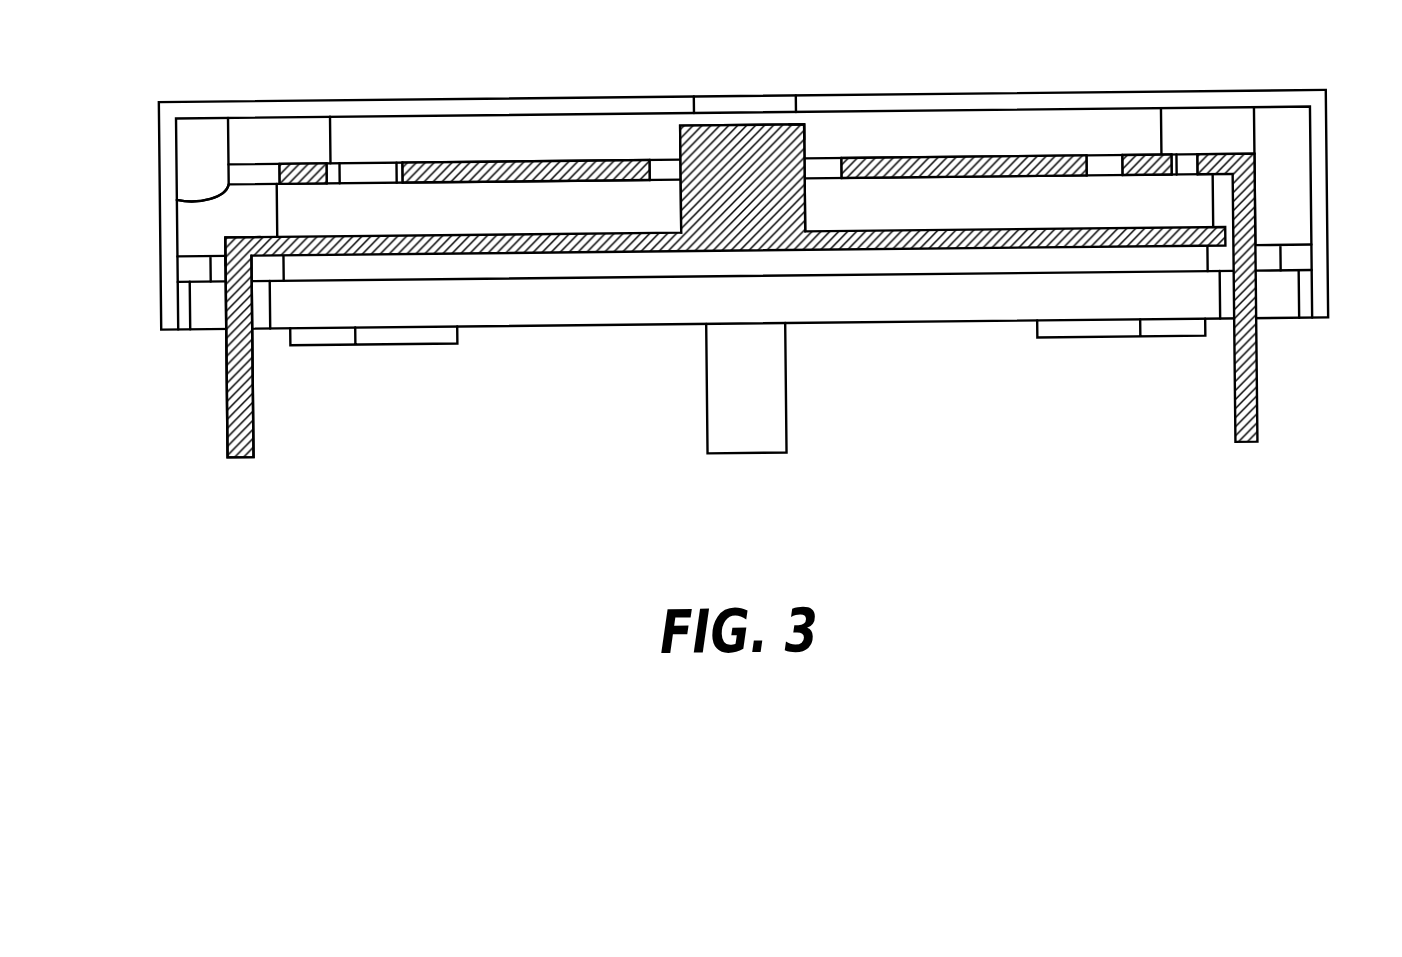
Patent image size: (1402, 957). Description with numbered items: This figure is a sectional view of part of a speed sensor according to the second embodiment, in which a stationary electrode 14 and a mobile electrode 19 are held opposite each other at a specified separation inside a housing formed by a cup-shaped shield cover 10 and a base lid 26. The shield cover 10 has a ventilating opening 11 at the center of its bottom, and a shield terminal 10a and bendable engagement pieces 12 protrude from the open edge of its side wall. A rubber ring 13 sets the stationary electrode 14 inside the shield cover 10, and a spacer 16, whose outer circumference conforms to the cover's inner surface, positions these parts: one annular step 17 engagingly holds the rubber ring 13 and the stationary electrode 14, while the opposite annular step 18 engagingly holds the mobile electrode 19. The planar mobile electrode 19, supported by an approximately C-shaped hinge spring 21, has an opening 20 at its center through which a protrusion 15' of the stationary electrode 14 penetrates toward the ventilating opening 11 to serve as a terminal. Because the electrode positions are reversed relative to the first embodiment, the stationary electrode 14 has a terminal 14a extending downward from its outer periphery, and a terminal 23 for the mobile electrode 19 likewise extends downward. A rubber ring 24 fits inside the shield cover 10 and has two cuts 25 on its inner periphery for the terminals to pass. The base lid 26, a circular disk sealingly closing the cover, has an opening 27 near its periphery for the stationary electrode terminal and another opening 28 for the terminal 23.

The shield cover 10 is at (502, 106).
The shield terminal 10a is at (745, 438).
The ventilating opening 11 is at (743, 103).
The bendable engagement pieces 12 is at (318, 334).
The rubber ring 13 is at (284, 127).
The stationary electrode 14 is at (886, 249).
The terminal 14a is at (237, 455).
The protrusion 15' is at (814, 85).
The spacer 16 is at (198, 124).
The annular step 17 is at (205, 196).
The annular step 18 is at (237, 231).
The mobile electrode 19 is at (981, 160).
The opening 20 is at (664, 162).
The hinge spring 21 is at (1151, 164).
The terminal 23 is at (1245, 452).
The rubber ring 24 is at (565, 257).
The cut 25 is at (212, 262).
The base lid 26 is at (497, 303).
The opening 27 is at (212, 307).
The opening 28 is at (1276, 306).